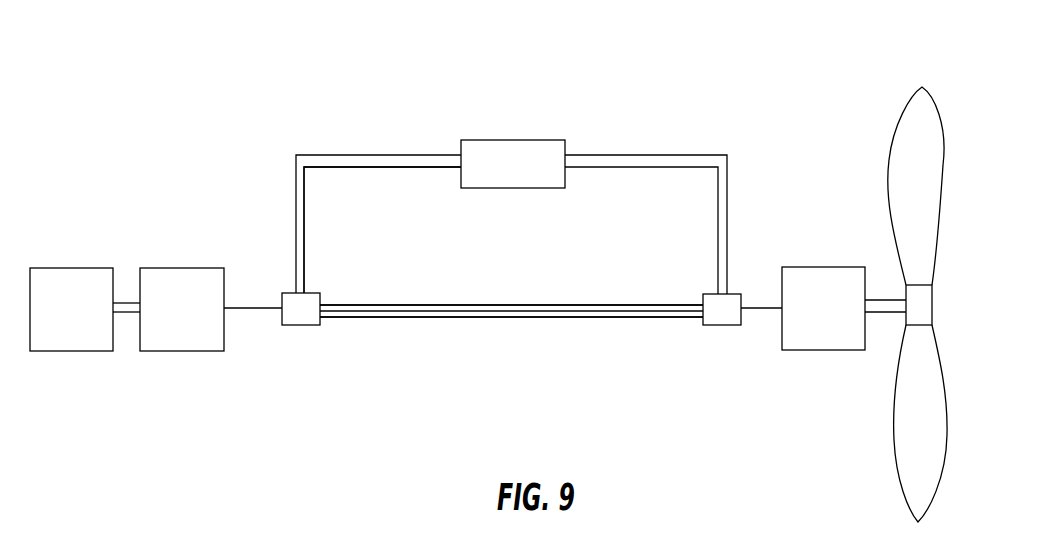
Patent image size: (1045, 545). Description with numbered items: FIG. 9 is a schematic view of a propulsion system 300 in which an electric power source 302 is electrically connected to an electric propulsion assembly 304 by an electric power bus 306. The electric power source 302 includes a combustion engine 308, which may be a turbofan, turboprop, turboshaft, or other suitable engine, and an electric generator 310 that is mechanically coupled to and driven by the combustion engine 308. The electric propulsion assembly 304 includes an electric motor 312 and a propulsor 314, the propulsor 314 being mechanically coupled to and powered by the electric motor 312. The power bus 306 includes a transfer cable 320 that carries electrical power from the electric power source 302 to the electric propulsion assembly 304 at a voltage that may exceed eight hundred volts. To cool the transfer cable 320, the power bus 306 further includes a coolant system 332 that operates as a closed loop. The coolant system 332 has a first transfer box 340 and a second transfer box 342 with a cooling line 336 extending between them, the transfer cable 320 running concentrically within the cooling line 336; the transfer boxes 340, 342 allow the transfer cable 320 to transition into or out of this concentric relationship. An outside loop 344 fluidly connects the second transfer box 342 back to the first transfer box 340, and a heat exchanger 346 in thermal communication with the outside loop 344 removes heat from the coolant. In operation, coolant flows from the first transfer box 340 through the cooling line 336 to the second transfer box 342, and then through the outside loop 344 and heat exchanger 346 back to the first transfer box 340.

The propulsion system 300 is at (673, 72).
The electric power source 302 is at (144, 232).
The electric propulsion assembly 304 is at (862, 218).
The electric power bus 306 is at (770, 172).
The combustion engine 308 is at (92, 324).
The electric generator 310 is at (203, 324).
The electric motor 312 is at (845, 319).
The propulsor 314 is at (897, 383).
The transfer cable 320 is at (526, 318).
The coolant system 332 is at (285, 172).
The cooling line 336 is at (395, 318).
The first transfer box 340 is at (302, 326).
The second transfer box 342 is at (722, 327).
The outside loop 344 is at (375, 158).
The heat exchanger 346 is at (506, 155).